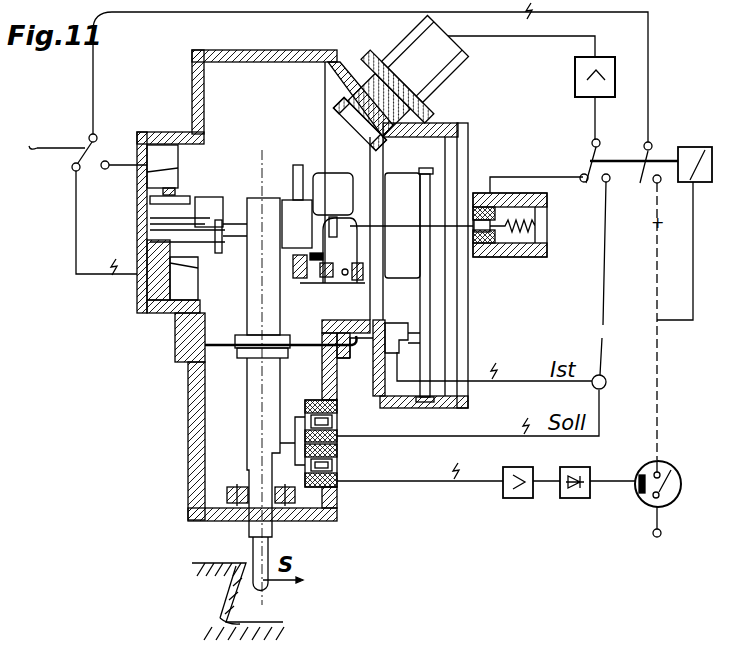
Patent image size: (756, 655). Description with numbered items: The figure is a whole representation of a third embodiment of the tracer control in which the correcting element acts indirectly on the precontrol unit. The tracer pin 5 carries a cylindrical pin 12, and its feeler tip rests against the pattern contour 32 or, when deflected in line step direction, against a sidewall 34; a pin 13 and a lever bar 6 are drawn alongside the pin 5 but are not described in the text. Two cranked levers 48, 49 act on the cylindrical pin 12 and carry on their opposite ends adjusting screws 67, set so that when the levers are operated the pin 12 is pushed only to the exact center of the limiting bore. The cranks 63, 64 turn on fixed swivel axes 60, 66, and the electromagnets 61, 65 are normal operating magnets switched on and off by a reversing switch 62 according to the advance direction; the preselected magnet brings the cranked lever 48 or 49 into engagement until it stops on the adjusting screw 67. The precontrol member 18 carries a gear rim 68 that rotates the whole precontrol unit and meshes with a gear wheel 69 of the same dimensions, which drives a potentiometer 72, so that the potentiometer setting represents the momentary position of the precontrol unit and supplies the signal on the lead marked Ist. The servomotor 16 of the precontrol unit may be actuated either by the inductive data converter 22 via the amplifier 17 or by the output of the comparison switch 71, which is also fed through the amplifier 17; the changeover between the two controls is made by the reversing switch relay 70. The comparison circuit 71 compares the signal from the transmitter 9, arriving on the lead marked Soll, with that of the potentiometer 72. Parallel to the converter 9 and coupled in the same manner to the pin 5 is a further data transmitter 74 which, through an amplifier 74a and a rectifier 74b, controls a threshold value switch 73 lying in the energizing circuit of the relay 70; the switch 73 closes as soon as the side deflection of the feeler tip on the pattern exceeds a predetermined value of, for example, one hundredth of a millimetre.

The pin 5 is at (265, 322).
The lever bar 6 is at (318, 348).
The transmitter 9 is at (337, 405).
The cylindrical pin 12 is at (275, 195).
The stop pin 13 is at (297, 174).
The servomotor 16 is at (405, 50).
The amplifier 17 is at (603, 62).
The precontrol member 18 is at (391, 187).
The inductive data converter 22 is at (492, 258).
The pattern contour 32 is at (278, 624).
The sidewall 34 is at (258, 605).
The cranked lever 48 is at (333, 218).
The cranked lever 49 is at (293, 270).
The swivel axis 60 is at (196, 202).
The electromagnet 61 is at (165, 158).
The reversing switch 62 is at (69, 144).
The crank 63 is at (150, 200).
The crank 64 is at (165, 218).
The electromagnet 65 is at (180, 290).
The swivel axis 66 is at (219, 251).
The adjusting screw 67 is at (318, 283).
The gear rim 68 is at (430, 168).
The gear wheel 69 is at (425, 297).
The reversing switch relay 70 is at (688, 158).
The comparison switch 71 is at (606, 378).
The potentiometer 72 is at (402, 347).
The threshold value switch 73 is at (664, 462).
The data transmitter 74 is at (337, 485).
The amplifier 74a is at (520, 498).
The rectifier 74b is at (578, 498).